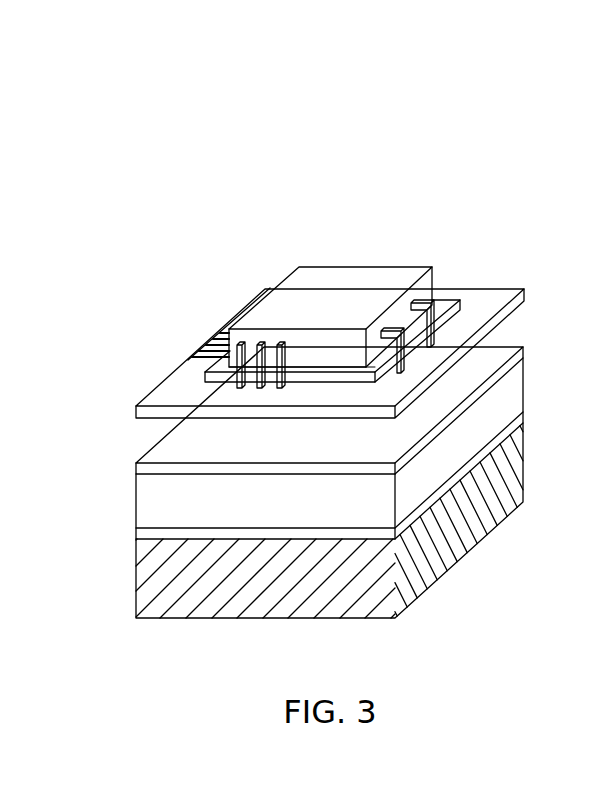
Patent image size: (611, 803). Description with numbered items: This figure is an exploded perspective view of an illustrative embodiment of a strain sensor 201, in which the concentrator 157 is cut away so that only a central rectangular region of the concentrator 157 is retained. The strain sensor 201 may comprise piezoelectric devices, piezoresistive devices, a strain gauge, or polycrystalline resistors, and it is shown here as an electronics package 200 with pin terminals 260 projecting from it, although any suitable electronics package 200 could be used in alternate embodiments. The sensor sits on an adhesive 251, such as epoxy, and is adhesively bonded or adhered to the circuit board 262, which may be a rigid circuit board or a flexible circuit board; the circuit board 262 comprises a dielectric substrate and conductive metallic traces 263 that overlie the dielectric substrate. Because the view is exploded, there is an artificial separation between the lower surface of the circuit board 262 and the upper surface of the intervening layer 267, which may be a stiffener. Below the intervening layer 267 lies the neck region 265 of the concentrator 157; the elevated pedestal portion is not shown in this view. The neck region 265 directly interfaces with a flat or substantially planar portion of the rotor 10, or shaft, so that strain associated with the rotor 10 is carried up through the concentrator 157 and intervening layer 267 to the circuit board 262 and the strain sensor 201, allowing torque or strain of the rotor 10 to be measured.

The strain sensor 201 is at (408, 139).
The electronics package 200 is at (325, 287).
The pin terminals 260 is at (388, 331).
The conductive metallic traces 263 is at (207, 351).
The adhesive 251 is at (220, 375).
The circuit board 262 is at (163, 413).
The concentrator 157 is at (481, 411).
The neck region 265 is at (133, 508).
The intervening layer 267 is at (265, 467).
The rotor 10 is at (157, 586).